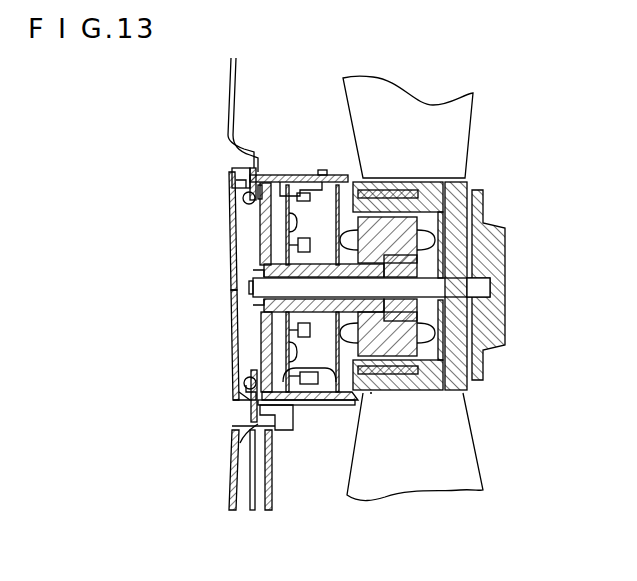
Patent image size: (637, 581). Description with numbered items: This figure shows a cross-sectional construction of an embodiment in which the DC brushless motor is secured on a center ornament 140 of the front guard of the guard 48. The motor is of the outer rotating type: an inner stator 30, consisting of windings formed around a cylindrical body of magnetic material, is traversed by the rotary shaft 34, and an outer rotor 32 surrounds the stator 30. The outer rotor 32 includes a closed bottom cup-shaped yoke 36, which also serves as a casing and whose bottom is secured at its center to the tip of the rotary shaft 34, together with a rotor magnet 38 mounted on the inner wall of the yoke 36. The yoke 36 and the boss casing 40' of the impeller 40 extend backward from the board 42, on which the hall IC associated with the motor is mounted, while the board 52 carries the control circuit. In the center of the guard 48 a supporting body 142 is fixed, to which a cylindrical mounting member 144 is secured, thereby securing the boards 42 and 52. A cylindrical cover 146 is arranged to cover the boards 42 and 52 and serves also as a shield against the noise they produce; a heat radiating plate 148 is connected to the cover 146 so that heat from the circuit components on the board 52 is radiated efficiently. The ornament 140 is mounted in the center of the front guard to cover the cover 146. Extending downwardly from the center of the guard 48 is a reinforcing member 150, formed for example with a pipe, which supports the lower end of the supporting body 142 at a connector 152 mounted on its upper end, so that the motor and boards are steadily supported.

The inner stator 30 is at (476, 332).
The outer rotor 32 is at (357, 397).
The rotary shaft 34 is at (485, 288).
The yoke 36 is at (462, 183).
The magnet 38 is at (420, 178).
The impeller 40 is at (446, 447).
The boss casing 40' is at (448, 300).
The board 42 is at (336, 176).
The guard 48 is at (232, 74).
The board 52 is at (281, 186).
The center ornament 140 is at (229, 243).
The supporting body 142 is at (235, 360).
The cylindrical mounting member 144 is at (372, 395).
The cylindrical cover 146 is at (271, 176).
The heat radiating plate 148 is at (303, 176).
The reinforcing member 150 is at (274, 492).
The connector 152 is at (260, 424).